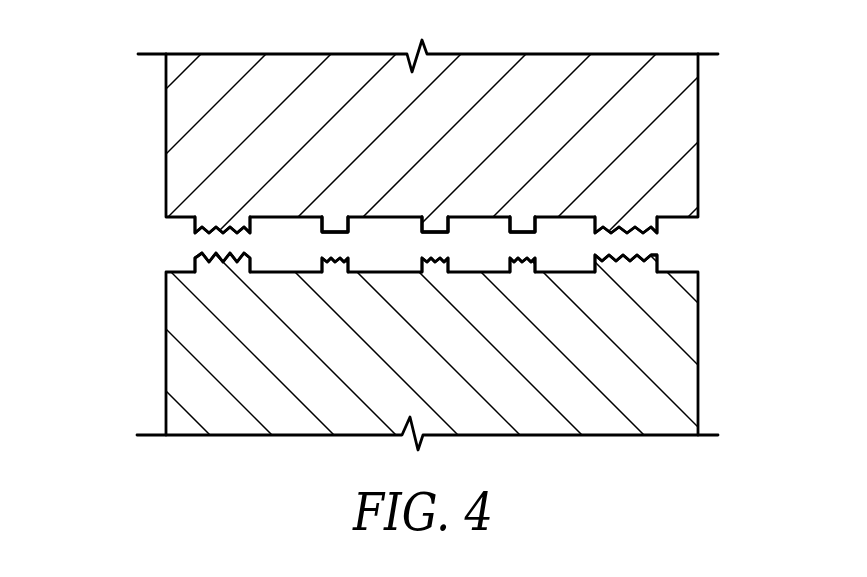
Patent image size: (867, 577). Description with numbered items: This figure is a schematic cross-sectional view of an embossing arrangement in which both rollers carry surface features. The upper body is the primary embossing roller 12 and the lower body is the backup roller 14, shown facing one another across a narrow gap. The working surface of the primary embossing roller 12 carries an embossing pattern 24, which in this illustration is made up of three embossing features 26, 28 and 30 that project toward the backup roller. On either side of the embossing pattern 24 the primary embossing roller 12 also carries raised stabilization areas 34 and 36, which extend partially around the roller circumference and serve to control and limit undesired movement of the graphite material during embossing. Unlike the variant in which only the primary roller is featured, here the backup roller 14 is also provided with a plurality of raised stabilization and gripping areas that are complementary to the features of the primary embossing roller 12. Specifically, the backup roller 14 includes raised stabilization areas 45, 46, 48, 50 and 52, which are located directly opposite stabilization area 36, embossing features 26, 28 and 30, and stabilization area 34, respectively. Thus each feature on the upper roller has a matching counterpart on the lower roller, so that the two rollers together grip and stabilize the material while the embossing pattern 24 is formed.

The primary embossing roller 12 is at (688, 112).
The backup roller 14 is at (683, 375).
The embossing pattern 24 is at (426, 182).
The embossing feature 26 is at (332, 226).
The embossing feature 28 is at (432, 226).
The embossing feature 30 is at (523, 228).
The raised stabilization area 34 is at (647, 227).
The raised stabilization area 36 is at (208, 222).
The raised stabilization area 45 is at (216, 258).
The raised stabilization area 46 is at (330, 270).
The raised stabilization area 48 is at (432, 272).
The raised stabilization area 50 is at (528, 262).
The raised stabilization area 52 is at (630, 267).